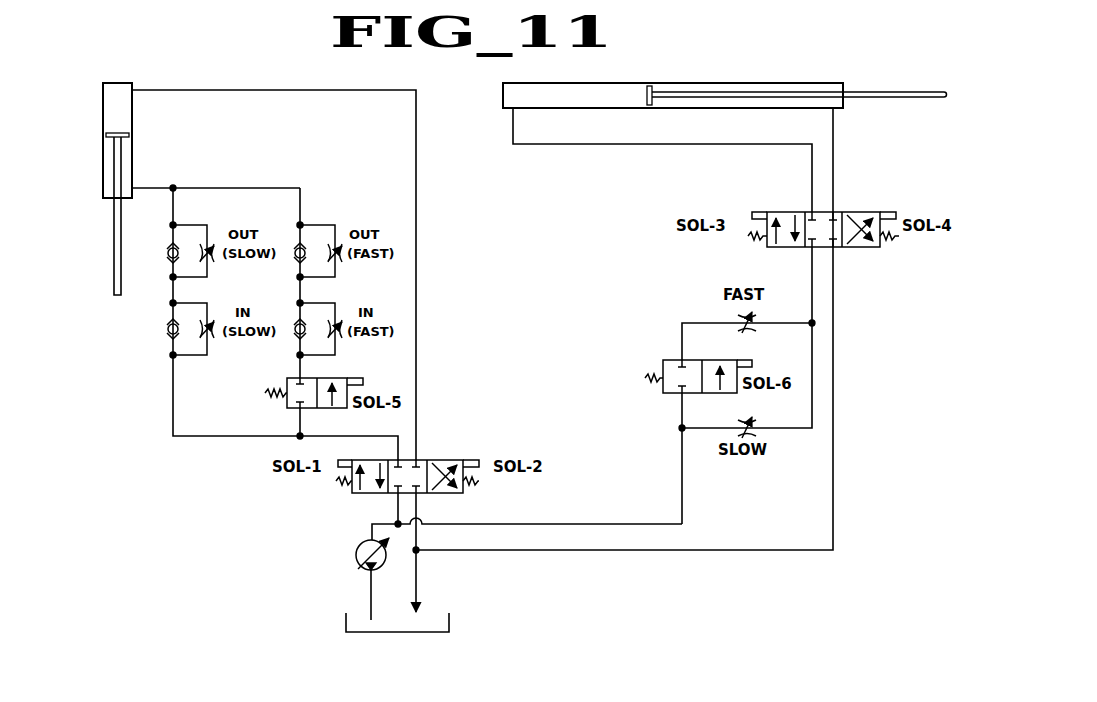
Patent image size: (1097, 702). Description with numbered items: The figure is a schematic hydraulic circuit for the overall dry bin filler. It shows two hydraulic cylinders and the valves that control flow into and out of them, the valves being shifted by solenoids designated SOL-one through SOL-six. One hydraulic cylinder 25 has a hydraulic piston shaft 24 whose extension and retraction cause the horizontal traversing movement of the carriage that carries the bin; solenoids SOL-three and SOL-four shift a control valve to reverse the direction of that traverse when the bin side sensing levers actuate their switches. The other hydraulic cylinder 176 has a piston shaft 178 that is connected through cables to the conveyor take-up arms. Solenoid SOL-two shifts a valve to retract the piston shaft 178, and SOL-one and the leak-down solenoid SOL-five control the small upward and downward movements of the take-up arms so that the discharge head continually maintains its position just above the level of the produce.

The hydraulic cylinder 176 is at (133, 118).
The piston shaft 178 is at (117, 268).
The hydraulic cylinder 25 is at (694, 82).
The hydraulic piston shaft 24 is at (862, 91).